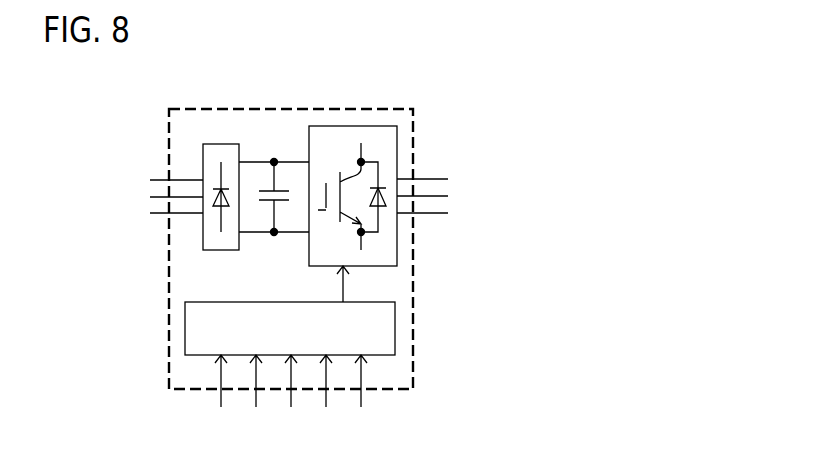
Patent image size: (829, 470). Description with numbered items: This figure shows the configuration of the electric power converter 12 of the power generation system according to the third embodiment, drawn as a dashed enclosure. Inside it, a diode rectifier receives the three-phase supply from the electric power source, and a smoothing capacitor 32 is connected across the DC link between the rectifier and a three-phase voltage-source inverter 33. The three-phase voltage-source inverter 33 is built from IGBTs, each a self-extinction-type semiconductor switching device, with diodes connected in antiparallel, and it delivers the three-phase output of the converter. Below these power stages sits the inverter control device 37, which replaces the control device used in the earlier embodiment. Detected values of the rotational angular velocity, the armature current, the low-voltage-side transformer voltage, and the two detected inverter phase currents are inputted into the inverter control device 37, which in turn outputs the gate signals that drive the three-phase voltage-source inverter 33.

The electric power converter 12 is at (413, 140).
The smoothing capacitor 32 is at (274, 162).
The three-phase voltage-source inverter 33 is at (380, 126).
The inverter control device 37 is at (395, 320).